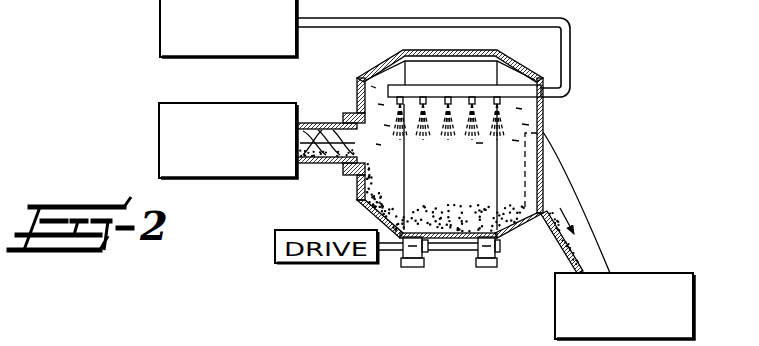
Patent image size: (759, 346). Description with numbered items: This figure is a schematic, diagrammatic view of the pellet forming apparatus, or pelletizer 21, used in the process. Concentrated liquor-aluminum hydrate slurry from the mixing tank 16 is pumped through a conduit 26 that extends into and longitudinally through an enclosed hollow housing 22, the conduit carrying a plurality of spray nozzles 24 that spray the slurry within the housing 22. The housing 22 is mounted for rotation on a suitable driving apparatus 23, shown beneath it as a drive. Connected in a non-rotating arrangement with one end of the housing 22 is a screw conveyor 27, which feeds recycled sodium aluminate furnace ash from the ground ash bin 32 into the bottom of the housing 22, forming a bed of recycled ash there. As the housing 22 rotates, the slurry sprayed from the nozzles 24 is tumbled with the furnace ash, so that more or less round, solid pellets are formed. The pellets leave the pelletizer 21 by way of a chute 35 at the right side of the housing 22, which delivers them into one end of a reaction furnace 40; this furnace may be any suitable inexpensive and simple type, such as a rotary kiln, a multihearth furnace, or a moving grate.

The mixing tank 16 is at (240, 50).
The pelletizer 21 is at (485, 134).
The enclosed hollow housing 22 is at (376, 75).
The driving apparatus 23 is at (486, 267).
The spray nozzles 24 is at (472, 97).
The feed pipe from mixer tank 26 is at (478, 18).
The screw conveyor 27 is at (337, 120).
The ground ash bin 32 is at (215, 172).
The chute 35 is at (590, 229).
The reaction furnace 40 is at (624, 306).